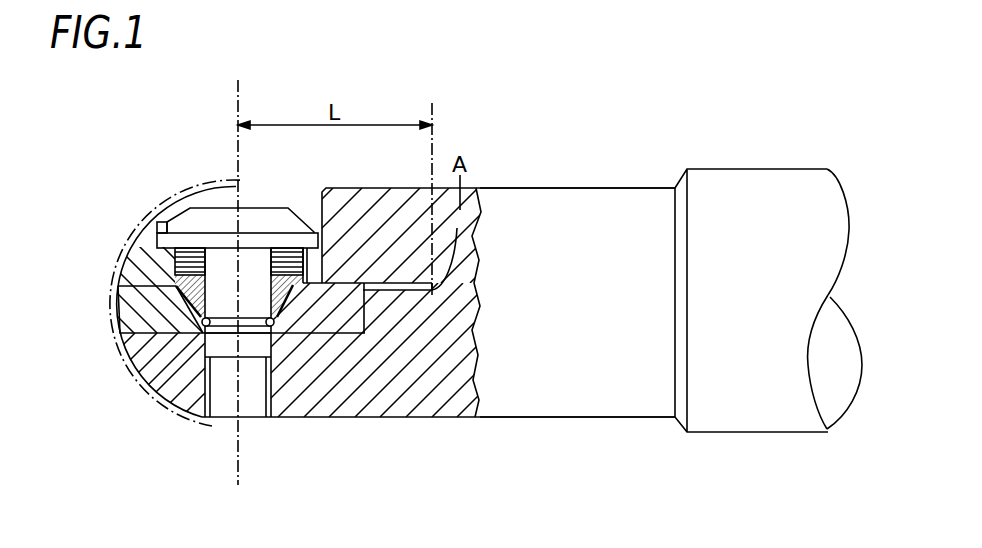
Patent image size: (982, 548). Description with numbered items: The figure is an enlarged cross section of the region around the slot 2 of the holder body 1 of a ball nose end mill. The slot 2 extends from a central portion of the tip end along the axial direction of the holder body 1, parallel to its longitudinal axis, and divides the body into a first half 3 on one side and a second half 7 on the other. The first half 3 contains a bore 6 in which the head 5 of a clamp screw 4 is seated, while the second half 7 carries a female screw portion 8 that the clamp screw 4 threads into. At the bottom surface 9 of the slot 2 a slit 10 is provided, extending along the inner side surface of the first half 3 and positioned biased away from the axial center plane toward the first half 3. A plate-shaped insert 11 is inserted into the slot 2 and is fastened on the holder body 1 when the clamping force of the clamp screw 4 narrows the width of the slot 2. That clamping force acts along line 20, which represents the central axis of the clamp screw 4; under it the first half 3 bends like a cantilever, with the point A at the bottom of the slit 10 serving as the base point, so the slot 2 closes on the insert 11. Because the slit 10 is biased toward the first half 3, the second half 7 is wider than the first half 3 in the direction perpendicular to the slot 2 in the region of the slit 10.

The holder body 1 is at (568, 388).
The slot 2 is at (140, 333).
The first half 3 is at (152, 237).
The clamp screw 4 is at (223, 406).
The head 5 is at (203, 217).
The bore 6 is at (315, 210).
The second half 7 is at (152, 373).
The female screw portion 8 is at (270, 392).
The bottom surface 9 is at (365, 300).
The slit 10 is at (400, 291).
The plate-shaped insert 11 is at (135, 296).
The line 20— 20 is at (240, 287).